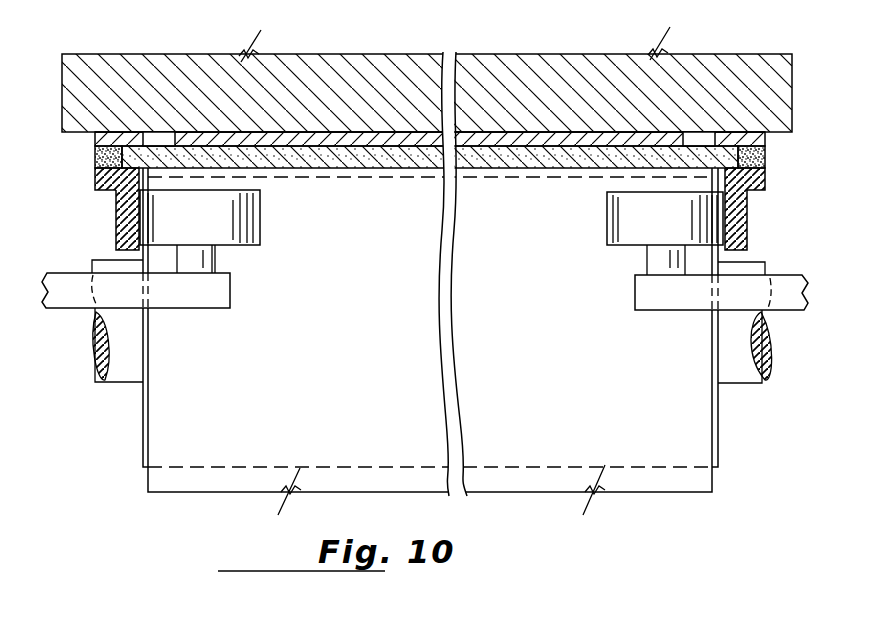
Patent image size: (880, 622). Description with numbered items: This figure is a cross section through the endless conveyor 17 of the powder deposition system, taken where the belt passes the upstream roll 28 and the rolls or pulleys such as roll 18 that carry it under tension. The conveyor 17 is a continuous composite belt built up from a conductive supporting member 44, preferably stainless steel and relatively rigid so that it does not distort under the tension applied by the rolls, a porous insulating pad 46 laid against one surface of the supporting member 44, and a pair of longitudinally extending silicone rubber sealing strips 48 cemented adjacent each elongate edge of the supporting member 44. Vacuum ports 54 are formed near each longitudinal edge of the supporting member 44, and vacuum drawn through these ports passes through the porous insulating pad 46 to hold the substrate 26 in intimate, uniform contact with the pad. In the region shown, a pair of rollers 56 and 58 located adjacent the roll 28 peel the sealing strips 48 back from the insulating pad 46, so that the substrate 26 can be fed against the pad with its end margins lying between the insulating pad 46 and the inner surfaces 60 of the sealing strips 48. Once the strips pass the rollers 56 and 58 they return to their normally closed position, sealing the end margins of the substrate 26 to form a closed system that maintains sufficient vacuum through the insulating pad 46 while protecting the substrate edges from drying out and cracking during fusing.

The endless conveyor 17 is at (572, 131).
The roll 18 is at (720, 72).
The substrate 26 is at (184, 410).
The roll 28 is at (712, 428).
The conductive supporting member 44 is at (393, 131).
The porous insulating pad 46 is at (401, 153).
The sealing strips 48 is at (113, 204).
The vacuum ports 54 is at (157, 131).
The roller 56 is at (240, 215).
The roller 58 is at (612, 220).
The inner surfaces 60 is at (95, 182).